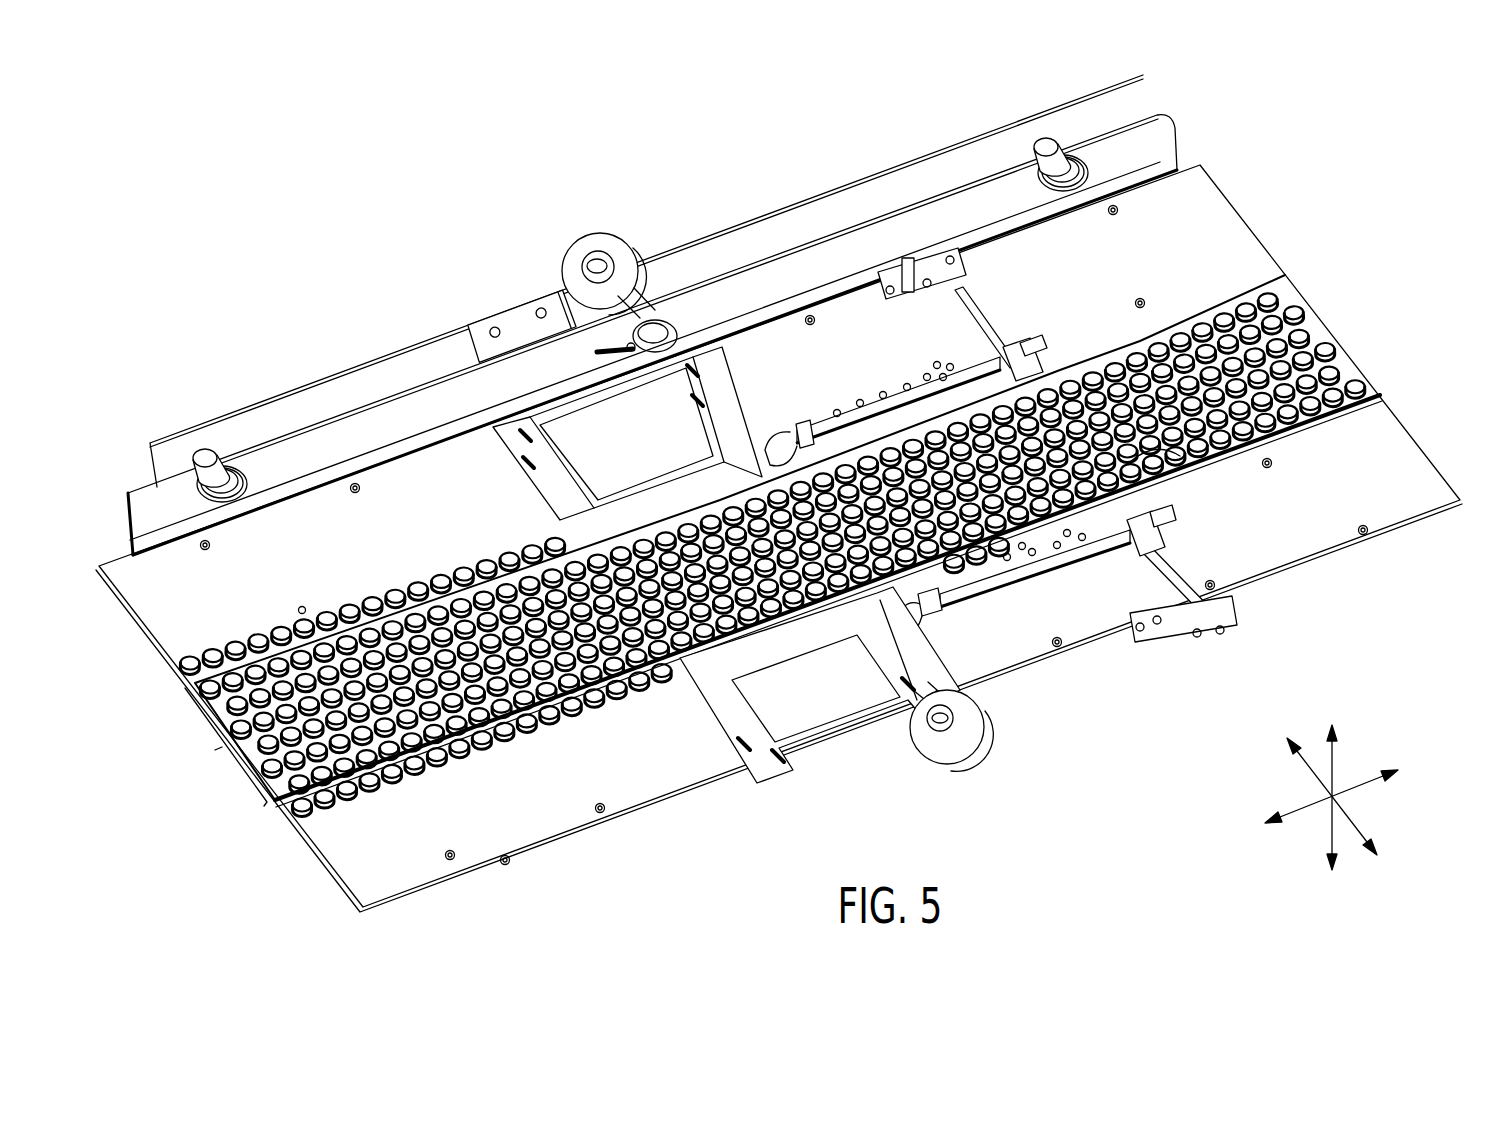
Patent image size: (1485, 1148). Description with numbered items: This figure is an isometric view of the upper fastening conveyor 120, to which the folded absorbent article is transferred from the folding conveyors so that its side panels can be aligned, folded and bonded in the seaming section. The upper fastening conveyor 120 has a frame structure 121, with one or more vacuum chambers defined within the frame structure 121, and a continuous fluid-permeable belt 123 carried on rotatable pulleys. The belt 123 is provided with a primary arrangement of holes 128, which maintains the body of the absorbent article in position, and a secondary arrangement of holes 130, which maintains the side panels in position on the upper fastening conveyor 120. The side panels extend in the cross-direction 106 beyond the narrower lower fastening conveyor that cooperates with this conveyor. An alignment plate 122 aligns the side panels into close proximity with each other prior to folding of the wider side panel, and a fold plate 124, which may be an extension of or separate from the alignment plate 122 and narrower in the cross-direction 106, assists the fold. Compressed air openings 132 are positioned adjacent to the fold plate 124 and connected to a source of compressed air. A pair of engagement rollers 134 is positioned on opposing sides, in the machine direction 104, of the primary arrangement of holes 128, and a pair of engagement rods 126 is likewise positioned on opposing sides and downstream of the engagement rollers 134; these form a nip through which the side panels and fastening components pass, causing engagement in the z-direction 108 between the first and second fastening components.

The machine direction 104 is at (1358, 782).
The cross-direction 106 is at (1310, 771).
The z-direction 108 is at (1327, 837).
The upper fastening conveyor 120 is at (312, 897).
The frame structure 121 is at (385, 423).
The alignment plate 122 is at (708, 405).
The continuous fluid-permeable belt 123 is at (640, 778).
The fold plate 124 is at (1067, 497).
The engagement rods 126 is at (1320, 427).
The primary arrangement of holes 128 is at (222, 747).
The secondary arrangement of holes 130 is at (192, 661).
The compressed air openings 132 is at (997, 557).
The engagement rollers 134 is at (1077, 350).